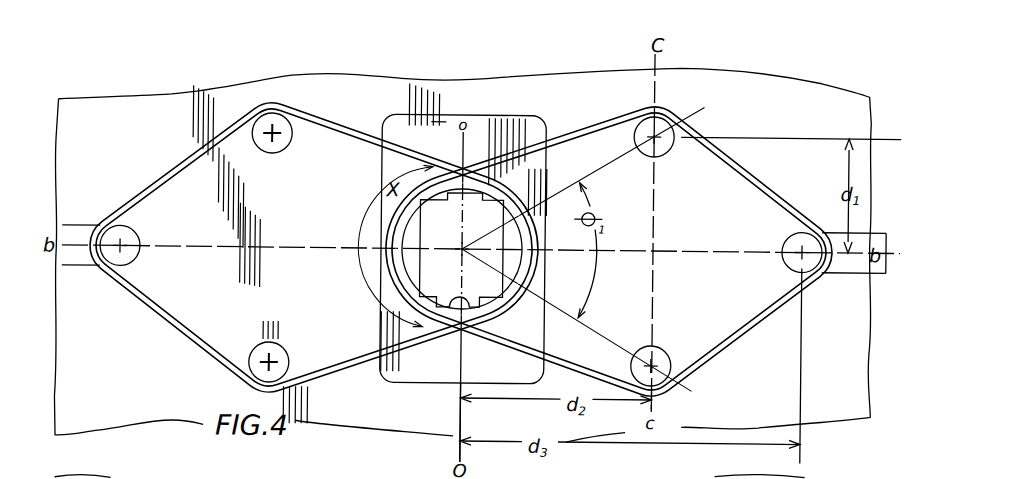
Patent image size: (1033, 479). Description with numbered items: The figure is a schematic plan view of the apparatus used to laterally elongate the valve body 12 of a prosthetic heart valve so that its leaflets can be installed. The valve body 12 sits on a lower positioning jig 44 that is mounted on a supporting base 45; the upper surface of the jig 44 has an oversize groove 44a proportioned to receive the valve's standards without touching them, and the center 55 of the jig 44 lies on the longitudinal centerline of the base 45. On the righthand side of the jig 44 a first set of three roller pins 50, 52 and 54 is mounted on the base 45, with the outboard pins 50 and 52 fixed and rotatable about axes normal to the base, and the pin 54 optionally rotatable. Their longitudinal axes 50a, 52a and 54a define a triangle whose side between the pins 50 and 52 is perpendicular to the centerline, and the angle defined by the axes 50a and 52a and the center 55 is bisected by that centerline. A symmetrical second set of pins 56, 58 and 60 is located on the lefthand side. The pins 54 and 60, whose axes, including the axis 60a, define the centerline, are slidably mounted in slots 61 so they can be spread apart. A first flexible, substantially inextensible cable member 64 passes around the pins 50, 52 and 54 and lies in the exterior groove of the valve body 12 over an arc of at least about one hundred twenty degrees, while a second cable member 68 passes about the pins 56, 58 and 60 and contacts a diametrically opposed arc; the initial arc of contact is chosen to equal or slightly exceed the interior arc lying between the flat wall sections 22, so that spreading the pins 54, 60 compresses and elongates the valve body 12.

The valve body 12 is at (403, 286).
The flat wall sections 22 is at (526, 192).
The positioning jig 44 is at (381, 214).
The groove 44a is at (437, 122).
The supporting base 45 is at (595, 116).
The roller pin 50 is at (705, 351).
The longitudinal axis 50a is at (654, 362).
The roller pin 52 is at (716, 146).
The longitudinal axis 52a is at (658, 125).
The roller pin 54 is at (783, 236).
The longitudinal axis 54a is at (802, 255).
The center 55 is at (461, 248).
The roller pin 56 is at (258, 346).
The roller pin 58 is at (262, 157).
The roller pin 60 is at (137, 259).
The longitudinal axis 60a is at (122, 247).
The slots 61 is at (90, 231).
The flexible endless cable member 64 is at (741, 176).
The flexible cable member 68 is at (194, 346).